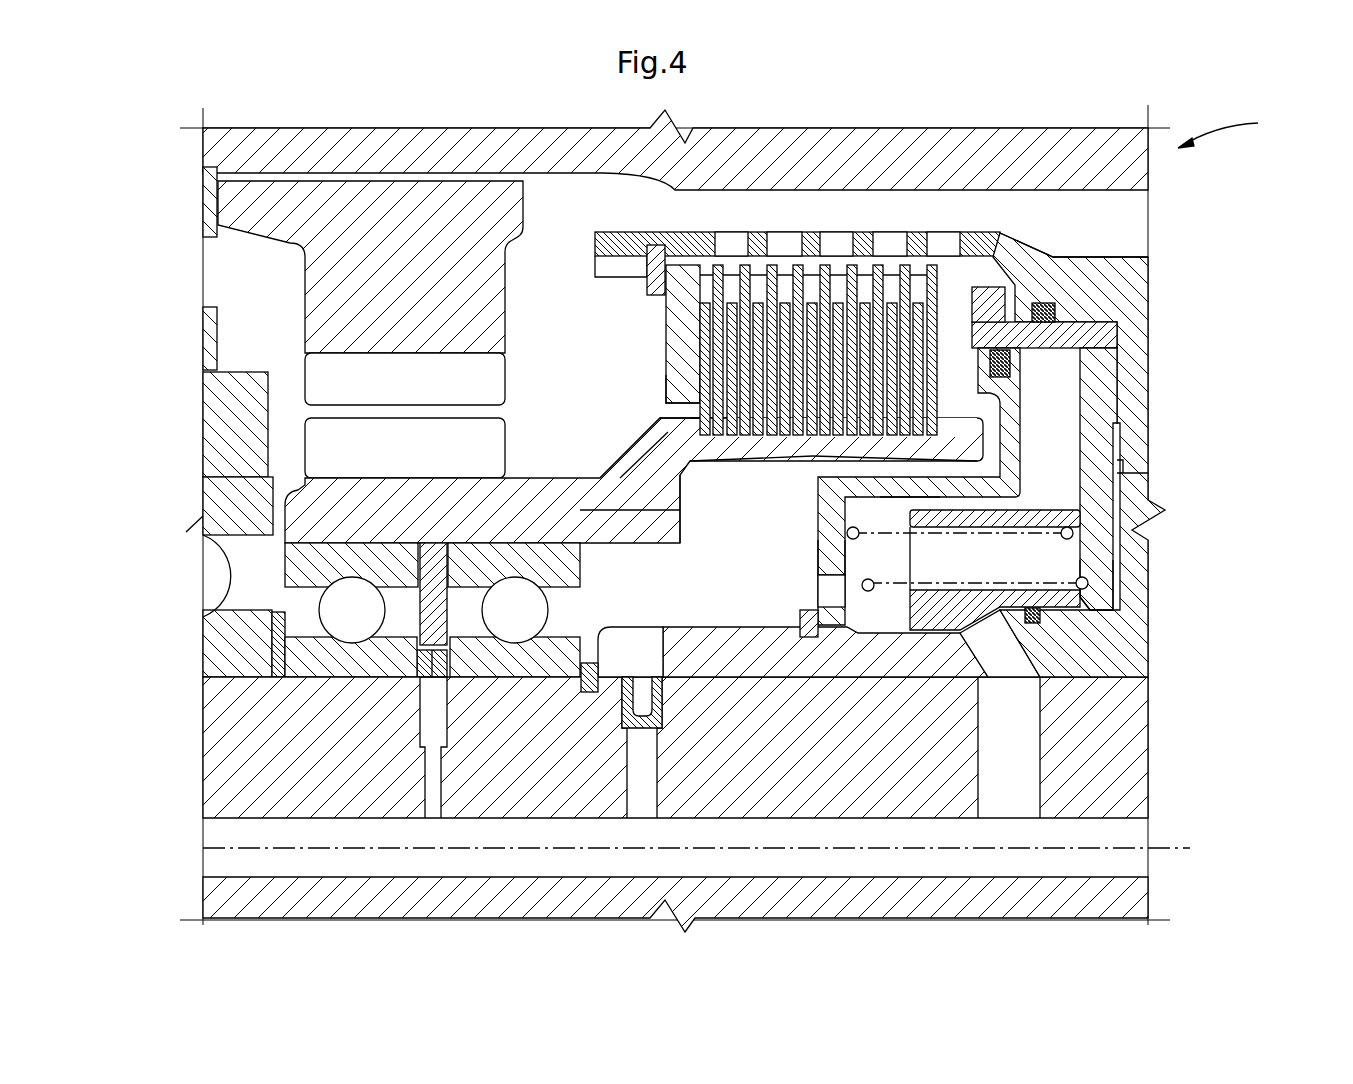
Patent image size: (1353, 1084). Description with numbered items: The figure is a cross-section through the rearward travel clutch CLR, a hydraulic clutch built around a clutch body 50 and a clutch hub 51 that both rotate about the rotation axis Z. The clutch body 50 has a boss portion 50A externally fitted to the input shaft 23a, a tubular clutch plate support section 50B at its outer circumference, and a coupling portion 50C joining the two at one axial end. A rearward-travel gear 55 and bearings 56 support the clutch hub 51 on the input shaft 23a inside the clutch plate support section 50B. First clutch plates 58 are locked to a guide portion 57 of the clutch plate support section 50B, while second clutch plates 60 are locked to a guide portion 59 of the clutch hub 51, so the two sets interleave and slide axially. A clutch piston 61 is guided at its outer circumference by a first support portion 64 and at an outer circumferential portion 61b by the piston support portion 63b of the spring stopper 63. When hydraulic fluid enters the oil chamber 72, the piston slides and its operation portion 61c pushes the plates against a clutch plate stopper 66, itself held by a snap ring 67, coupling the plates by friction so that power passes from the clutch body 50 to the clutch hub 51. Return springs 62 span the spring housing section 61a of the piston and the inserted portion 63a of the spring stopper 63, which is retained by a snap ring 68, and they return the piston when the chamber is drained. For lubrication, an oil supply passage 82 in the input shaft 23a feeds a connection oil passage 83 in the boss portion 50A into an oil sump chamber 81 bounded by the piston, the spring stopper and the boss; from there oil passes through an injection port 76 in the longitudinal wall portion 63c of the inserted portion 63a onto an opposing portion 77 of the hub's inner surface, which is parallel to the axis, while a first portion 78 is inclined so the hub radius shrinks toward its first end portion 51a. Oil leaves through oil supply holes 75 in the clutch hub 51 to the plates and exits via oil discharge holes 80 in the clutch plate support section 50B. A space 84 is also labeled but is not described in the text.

The clutch body 50 is at (578, 242).
The boss portion 50A is at (748, 657).
The clutch plate support section 50B is at (791, 177).
The coupling portion 50C is at (1117, 441).
The clutch hub 51 is at (634, 452).
The first end portion 51a is at (640, 455).
The rearward-travel gear 55 is at (343, 490).
The bearings 56 is at (372, 663).
The guide portion 57 is at (730, 268).
The first clutch plates 58 is at (720, 355).
The guide portion 59 is at (665, 425).
The second clutch plates 60 is at (913, 302).
The clutch piston 61 is at (1071, 427).
The spring housing section 61a is at (1028, 513).
The outer circumferential portion 61b is at (1066, 328).
The operation portion 61c is at (985, 293).
The return springs 62 is at (868, 594).
The spring stopper 63 is at (900, 492).
The inserted portion 63a is at (908, 498).
The piston support portion 63b is at (1018, 393).
The longitudinal wall portion 63c is at (818, 555).
The first support portion 64 is at (1083, 303).
The clutch plate stopper 66 is at (665, 385).
The snap ring 67 is at (647, 288).
The snap ring 68 is at (798, 618).
The oil chamber 72 is at (1112, 572).
The oil supply holes 75 is at (710, 440).
The injection port 76 is at (818, 587).
The opposing portion 77 is at (812, 455).
The first portion 78 is at (772, 456).
The oil discharge holes 80 is at (837, 245).
The oil sump chamber 81 is at (871, 572).
The oil supply passage 82 is at (820, 862).
The connection oil passage 83 is at (985, 643).
The space 84 is at (623, 600).
The input shaft 23a is at (250, 712).
The rearward travel clutch CLR is at (1245, 129).
The rotation axis Z is at (709, 848).